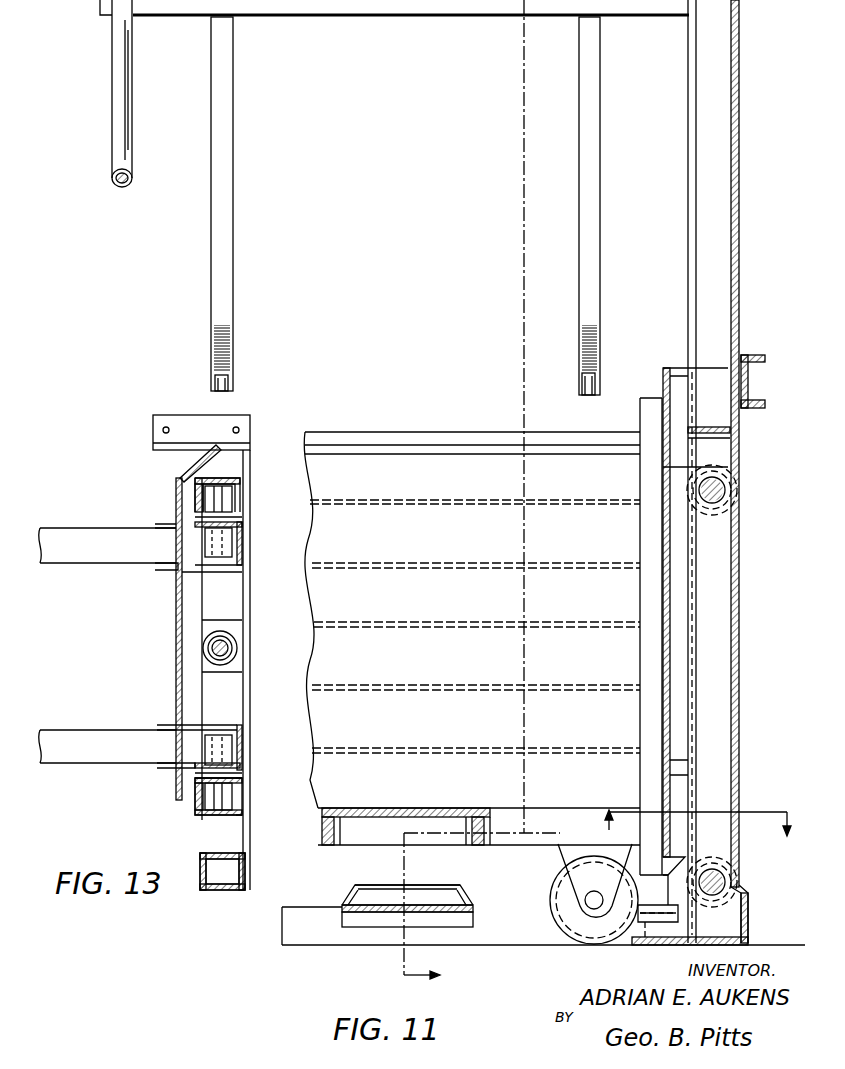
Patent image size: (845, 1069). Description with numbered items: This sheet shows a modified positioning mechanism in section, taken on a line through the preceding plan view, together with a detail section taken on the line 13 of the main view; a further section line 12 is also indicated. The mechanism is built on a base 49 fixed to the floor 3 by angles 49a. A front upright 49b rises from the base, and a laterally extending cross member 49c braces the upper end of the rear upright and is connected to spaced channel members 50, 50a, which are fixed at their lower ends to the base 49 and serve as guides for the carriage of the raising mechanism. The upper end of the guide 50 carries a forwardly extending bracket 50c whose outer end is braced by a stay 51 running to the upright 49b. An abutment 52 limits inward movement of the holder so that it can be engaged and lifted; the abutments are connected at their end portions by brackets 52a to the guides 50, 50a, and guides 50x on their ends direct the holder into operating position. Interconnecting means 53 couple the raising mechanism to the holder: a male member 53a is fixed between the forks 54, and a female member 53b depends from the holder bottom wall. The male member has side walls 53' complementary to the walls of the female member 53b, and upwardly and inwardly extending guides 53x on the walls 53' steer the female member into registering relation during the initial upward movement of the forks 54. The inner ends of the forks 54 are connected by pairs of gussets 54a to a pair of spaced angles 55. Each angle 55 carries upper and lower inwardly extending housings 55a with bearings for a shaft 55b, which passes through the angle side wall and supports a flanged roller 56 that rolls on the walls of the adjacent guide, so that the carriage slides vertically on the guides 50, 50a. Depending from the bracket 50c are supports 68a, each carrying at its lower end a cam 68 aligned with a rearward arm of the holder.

In FIG. 11, the floor 3 is at (805, 915).
In FIG. 11, the section line 12 is at (439, 913).
In FIG. 11, the section line 13 is at (692, 840).
In FIG. 11, the base 49 is at (745, 920).
In FIG. 13, the base 49 is at (243, 832).
In FIG. 13, the angle 49a is at (153, 422).
In FIG. 13, the front upright 49b is at (220, 890).
In FIG. 11, the cross member 49c is at (765, 385).
In FIG. 11, the channel member 50 is at (739, 157).
In FIG. 13, the channel member 50 is at (232, 478).
In FIG. 13, the channel member 50a is at (240, 800).
In FIG. 11, the bracket 50c is at (357, 13).
In FIG. 13, the guide 50x is at (190, 468).
In FIG. 11, the stay 51 is at (134, 140).
In FIG. 11, the abutment 52 is at (663, 378).
In FIG. 13, the abutment 52 is at (176, 637).
In FIG. 11, the bracket 52a is at (677, 370).
In FIG. 11, the interconnecting means 53 is at (428, 886).
In FIG. 11, the side wall 53' is at (439, 918).
In FIG. 11, the male member 53a is at (358, 913).
In FIG. 11, the female member 53b is at (340, 825).
In FIG. 11, the guide 53x is at (352, 889).
In FIG. 11, the fork 54 is at (282, 940).
In FIG. 13, the fork 54 is at (95, 528).
In FIG. 13, the gusset 54a is at (160, 524).
In FIG. 13, the angle 55 is at (238, 545).
In FIG. 11, the housing 55a is at (724, 483).
In FIG. 13, the housing 55a is at (218, 557).
In FIG. 11, the shaft 55b is at (727, 500).
In FIG. 13, the shaft 55b is at (205, 543).
In FIG. 13, the flanged roller 56 is at (232, 498).
In FIG. 11, the cam 68 is at (233, 340).
In FIG. 11, the support 68a is at (233, 172).